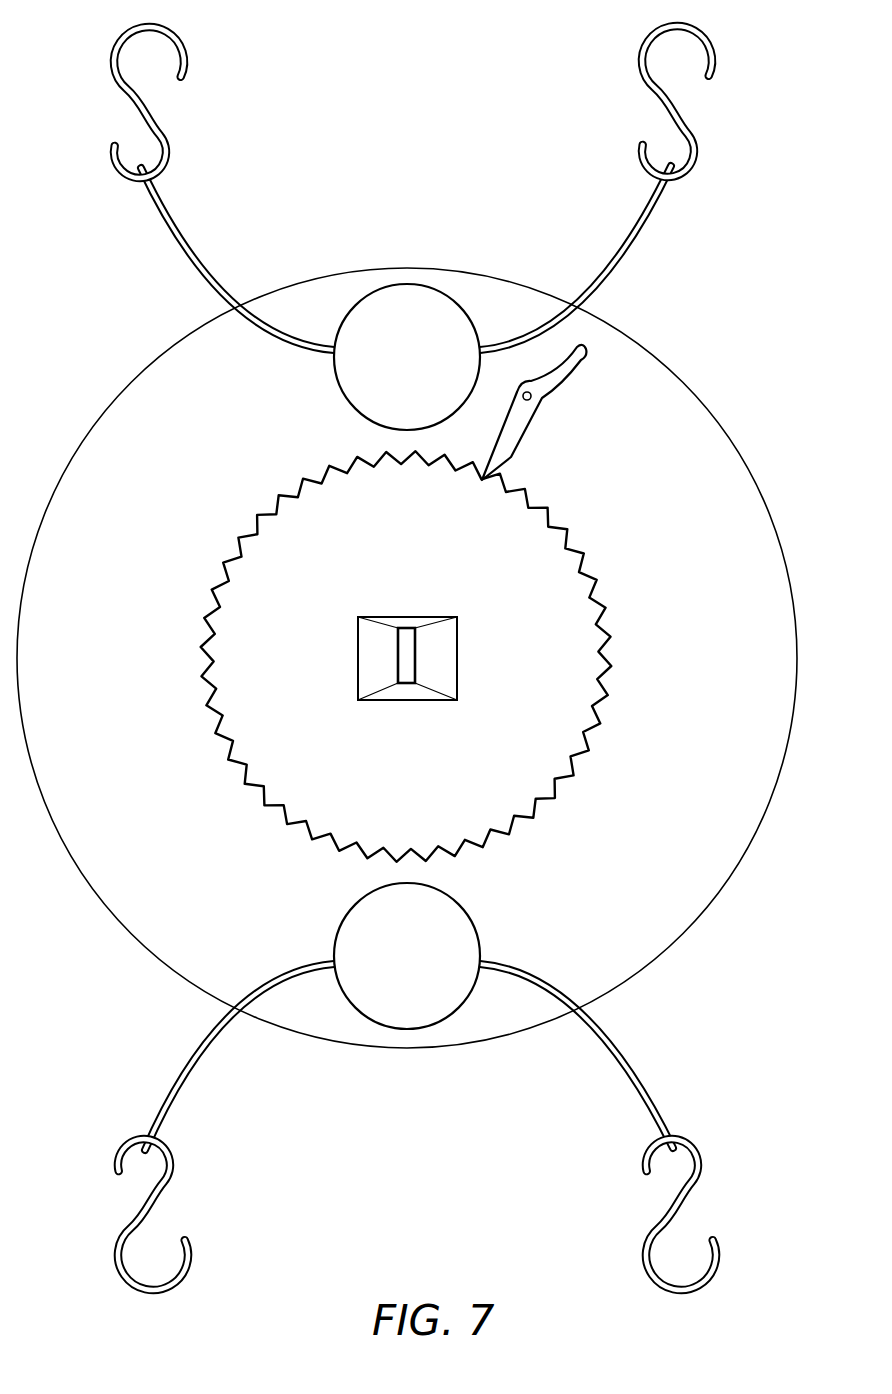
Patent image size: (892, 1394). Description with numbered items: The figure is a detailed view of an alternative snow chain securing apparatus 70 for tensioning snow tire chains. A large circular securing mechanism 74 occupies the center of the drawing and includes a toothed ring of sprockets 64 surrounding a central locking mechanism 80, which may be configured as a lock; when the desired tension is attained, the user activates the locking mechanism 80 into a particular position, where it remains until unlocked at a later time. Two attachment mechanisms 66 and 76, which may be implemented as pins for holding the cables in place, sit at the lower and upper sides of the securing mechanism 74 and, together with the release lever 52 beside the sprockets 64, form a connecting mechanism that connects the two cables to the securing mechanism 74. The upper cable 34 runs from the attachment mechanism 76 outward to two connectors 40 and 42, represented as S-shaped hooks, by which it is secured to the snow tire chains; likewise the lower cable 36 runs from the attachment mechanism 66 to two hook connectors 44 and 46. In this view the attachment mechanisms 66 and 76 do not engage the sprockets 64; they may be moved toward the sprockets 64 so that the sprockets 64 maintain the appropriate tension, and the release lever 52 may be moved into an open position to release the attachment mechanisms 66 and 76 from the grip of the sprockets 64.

The cable 34 is at (636, 250).
The cable 36 is at (646, 1072).
The connector 40 is at (112, 47).
The connector 42 is at (716, 45).
The connector 44 is at (113, 1268).
The connector 46 is at (723, 1262).
The release lever 52 is at (532, 425).
The sprockets 64 is at (598, 592).
The attachment mechanism 66 is at (390, 979).
The tensioning assembly 70 is at (505, 108).
The securing mechanism 74 is at (113, 393).
The attachment mechanism 76 is at (390, 380).
The locking mechanism 80 is at (458, 662).